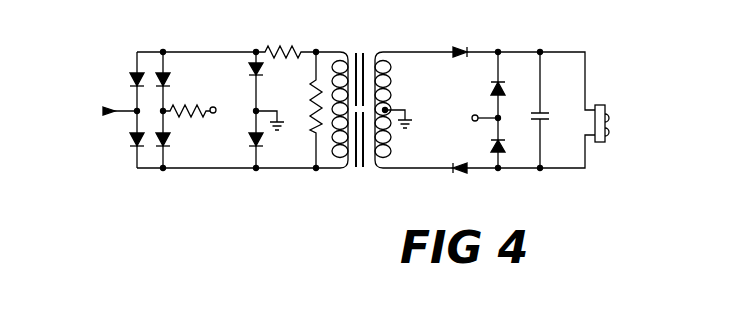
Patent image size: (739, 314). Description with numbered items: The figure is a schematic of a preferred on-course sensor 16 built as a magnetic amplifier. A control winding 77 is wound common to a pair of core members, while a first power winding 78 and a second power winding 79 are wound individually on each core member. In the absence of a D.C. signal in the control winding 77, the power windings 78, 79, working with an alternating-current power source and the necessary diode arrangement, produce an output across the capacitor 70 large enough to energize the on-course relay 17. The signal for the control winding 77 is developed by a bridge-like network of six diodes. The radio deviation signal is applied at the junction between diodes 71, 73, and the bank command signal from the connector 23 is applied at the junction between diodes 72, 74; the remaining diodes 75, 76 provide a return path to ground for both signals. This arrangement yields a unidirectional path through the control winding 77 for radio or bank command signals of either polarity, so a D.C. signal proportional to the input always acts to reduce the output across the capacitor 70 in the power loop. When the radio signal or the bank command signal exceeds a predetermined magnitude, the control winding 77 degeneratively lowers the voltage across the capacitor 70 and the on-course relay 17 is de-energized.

The on-course sensor 16 is at (327, 92).
The diode 71 is at (132, 73).
The diode 72 is at (167, 82).
The diode 73 is at (132, 146).
The diode 74 is at (167, 145).
The connector 23 is at (214, 113).
The diode 75 is at (261, 72).
The diode 76 is at (262, 146).
The control winding 77 is at (341, 158).
The first power winding 78 is at (388, 82).
The second power winding 79 is at (388, 144).
The capacitor 70 is at (543, 112).
The on-course relay 17 is at (605, 104).